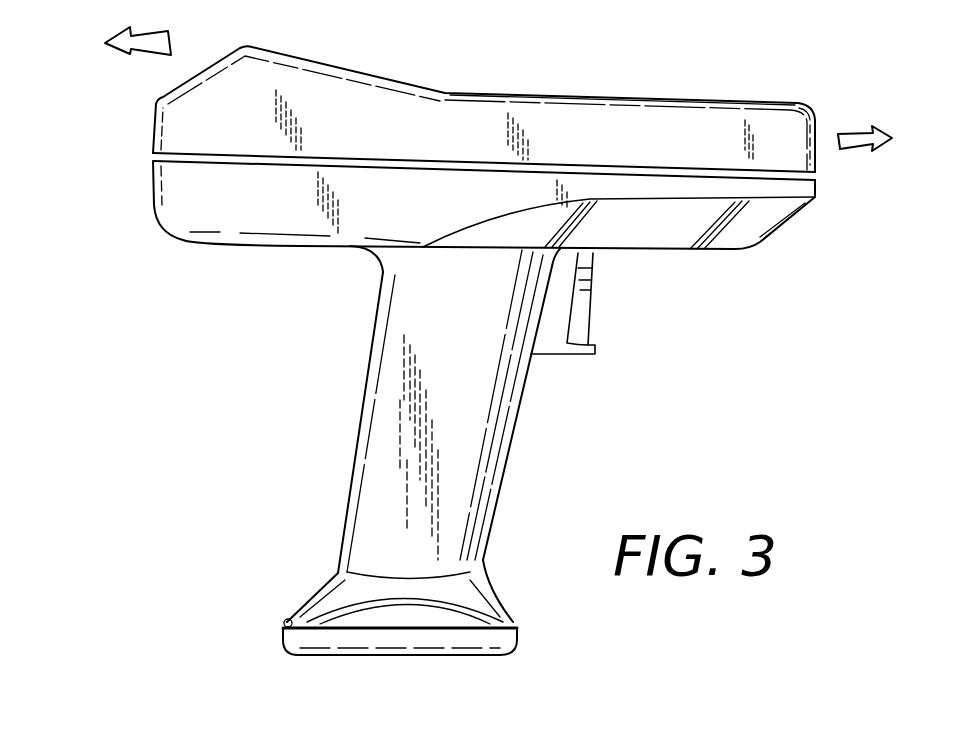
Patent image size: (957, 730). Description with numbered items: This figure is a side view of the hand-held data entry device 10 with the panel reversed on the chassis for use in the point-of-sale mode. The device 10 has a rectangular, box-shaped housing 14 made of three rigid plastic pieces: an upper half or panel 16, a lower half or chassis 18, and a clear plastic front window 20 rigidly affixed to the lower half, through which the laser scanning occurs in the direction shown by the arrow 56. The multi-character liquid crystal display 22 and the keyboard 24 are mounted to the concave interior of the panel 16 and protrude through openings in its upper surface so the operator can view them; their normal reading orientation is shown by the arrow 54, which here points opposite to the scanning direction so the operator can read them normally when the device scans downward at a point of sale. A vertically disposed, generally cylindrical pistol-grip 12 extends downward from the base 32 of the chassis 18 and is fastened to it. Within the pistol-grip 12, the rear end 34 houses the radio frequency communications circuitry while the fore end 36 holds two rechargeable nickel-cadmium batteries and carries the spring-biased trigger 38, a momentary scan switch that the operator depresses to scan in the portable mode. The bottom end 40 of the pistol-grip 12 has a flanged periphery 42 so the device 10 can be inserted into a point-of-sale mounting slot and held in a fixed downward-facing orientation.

The hand-held data entry device 10 is at (205, 296).
The pistol-grip 12 is at (474, 318).
The housing 14 is at (813, 197).
The panel 16 is at (670, 100).
The chassis 18 is at (705, 248).
The front window 20 is at (822, 128).
The liquid crystal display 22 is at (340, 68).
The keyboard 24 is at (551, 95).
The base of the chassis 32 is at (355, 246).
The rear end of the pistol-grip 34 is at (348, 470).
The fore end of the pistol-grip 36 is at (510, 457).
The trigger 38 is at (590, 321).
The bottom end of the pistol-grip 40 is at (453, 657).
The flanged periphery 42 is at (392, 630).
The normal reading orientation arrow 54 is at (150, 48).
The scanning direction arrow 56 is at (860, 150).